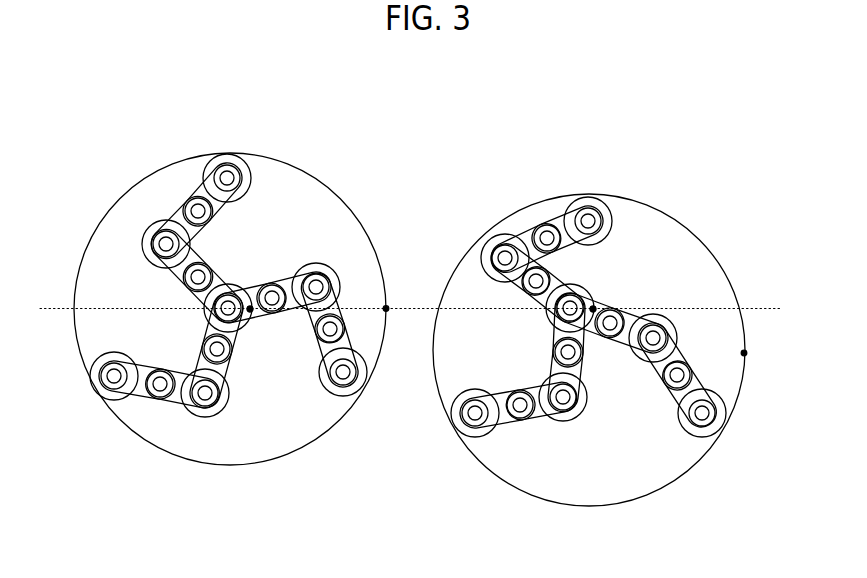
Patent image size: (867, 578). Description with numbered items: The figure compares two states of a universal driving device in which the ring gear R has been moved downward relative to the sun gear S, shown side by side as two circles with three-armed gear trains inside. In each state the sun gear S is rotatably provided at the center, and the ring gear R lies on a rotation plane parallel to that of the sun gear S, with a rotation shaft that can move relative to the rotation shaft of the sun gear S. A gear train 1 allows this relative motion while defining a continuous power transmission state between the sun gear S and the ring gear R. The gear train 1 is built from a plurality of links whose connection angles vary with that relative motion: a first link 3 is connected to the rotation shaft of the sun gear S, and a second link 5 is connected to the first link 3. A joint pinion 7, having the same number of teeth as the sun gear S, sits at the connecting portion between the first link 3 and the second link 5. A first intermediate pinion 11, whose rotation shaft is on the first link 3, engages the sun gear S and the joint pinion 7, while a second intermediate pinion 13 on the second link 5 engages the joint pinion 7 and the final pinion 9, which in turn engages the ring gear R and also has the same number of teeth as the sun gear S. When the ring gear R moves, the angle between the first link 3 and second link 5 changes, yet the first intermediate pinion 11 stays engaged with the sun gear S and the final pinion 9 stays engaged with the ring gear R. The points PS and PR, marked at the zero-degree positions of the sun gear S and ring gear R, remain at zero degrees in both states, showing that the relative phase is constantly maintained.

The gear train 1 is at (170, 412).
The first link 3 is at (170, 262).
The second link 5 is at (207, 170).
The joint pinion 7 is at (147, 243).
The final pinion 9 is at (228, 155).
The first intermediate pinion 11 is at (211, 264).
The second intermediate pinion 13 is at (180, 200).
The ring gear R is at (282, 160).
The point PR is at (387, 307).
The sun gear S is at (252, 311).
The point PS is at (252, 312).